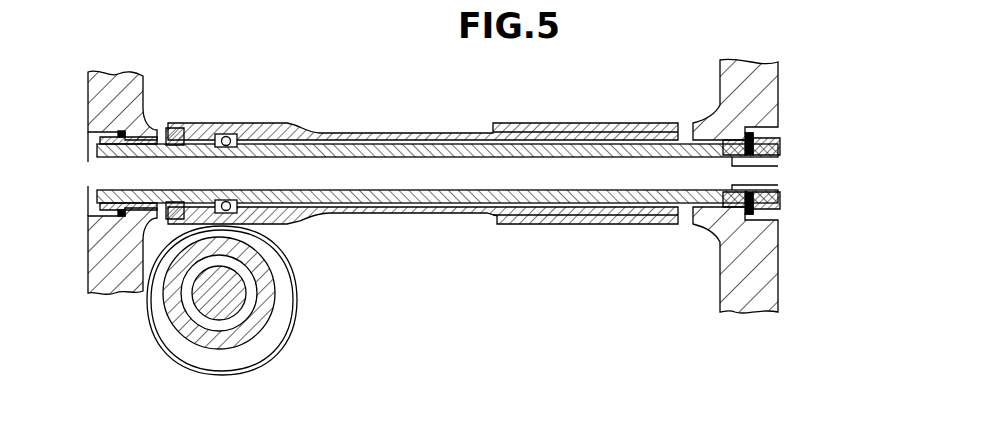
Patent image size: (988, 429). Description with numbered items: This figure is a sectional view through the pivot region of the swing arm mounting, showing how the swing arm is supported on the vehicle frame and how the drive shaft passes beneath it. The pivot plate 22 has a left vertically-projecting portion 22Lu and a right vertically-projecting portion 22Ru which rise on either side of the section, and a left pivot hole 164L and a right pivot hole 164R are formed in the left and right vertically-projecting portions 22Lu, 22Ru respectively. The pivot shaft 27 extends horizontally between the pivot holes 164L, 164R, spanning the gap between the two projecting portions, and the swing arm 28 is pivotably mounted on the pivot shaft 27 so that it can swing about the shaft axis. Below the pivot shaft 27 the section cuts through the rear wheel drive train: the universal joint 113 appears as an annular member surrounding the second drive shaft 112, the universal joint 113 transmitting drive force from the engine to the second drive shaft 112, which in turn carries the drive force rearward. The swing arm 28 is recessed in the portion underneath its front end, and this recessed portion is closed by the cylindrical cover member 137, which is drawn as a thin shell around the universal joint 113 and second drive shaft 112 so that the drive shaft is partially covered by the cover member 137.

The pivot plate 22 is at (401, 219).
The left vertically-projecting portion 22Lu is at (100, 282).
The right vertically-projecting portion 22Ru is at (746, 298).
The pivot shaft 27 is at (260, 144).
The swing arm 28 is at (337, 133).
The left pivot hole 164L is at (150, 163).
The right pivot hole 164R is at (706, 160).
The universal joint 113 is at (264, 267).
The second drive shaft 112 is at (238, 292).
The cylindrical cover member 137 is at (295, 320).